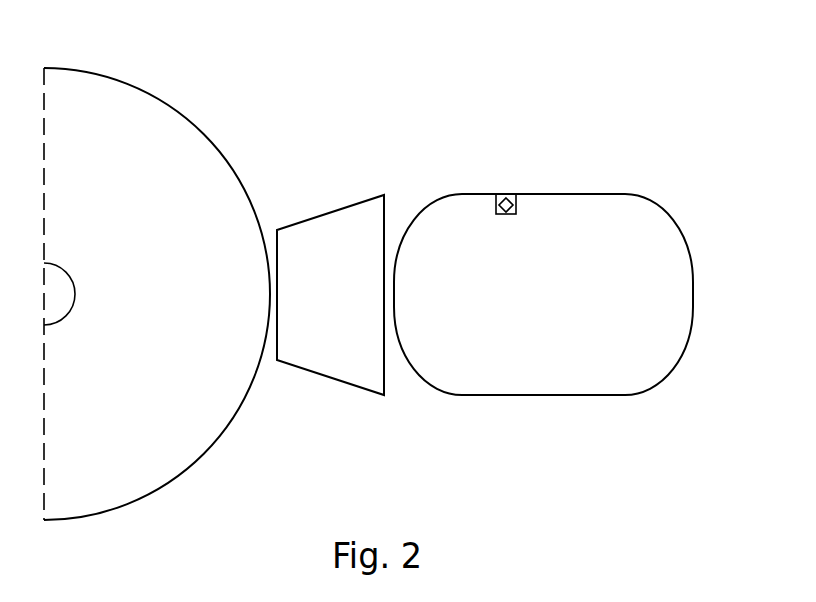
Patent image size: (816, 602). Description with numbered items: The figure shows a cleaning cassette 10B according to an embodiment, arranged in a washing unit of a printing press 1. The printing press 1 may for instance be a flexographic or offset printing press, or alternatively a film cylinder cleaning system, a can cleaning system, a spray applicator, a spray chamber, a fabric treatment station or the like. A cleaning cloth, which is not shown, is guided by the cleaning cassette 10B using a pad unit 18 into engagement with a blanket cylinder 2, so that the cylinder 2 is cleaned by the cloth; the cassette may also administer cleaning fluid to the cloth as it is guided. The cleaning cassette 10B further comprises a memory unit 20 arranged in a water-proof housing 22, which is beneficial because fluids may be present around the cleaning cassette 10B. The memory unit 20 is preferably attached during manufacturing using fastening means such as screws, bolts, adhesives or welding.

The printing press 1 is at (430, 103).
The blanket cylinder 2 is at (173, 482).
The pad unit 18 is at (347, 206).
The cleaning cassette 10B is at (687, 253).
The memory unit 20 is at (507, 197).
The water-proof housing 22 is at (518, 197).